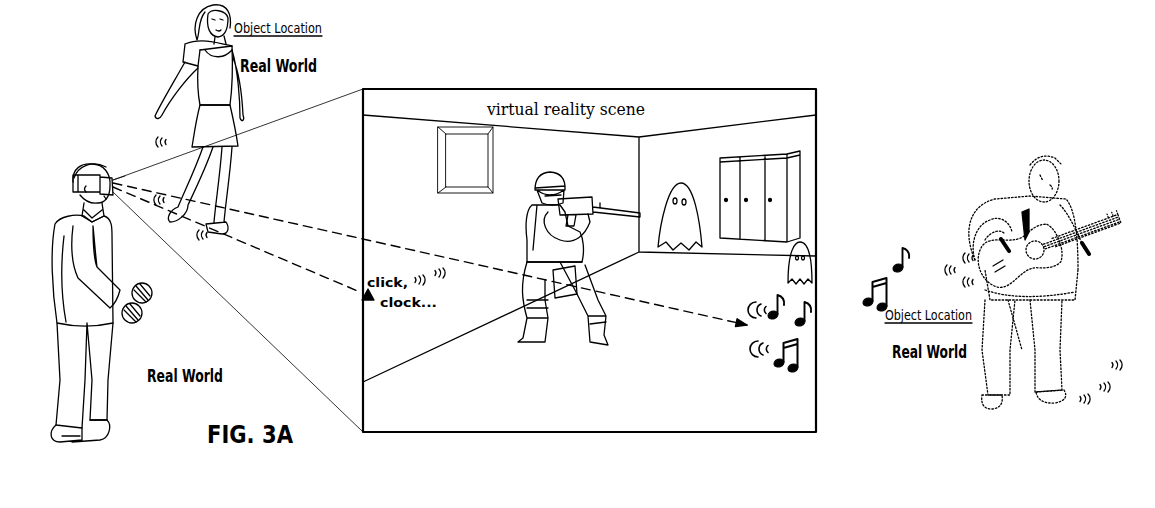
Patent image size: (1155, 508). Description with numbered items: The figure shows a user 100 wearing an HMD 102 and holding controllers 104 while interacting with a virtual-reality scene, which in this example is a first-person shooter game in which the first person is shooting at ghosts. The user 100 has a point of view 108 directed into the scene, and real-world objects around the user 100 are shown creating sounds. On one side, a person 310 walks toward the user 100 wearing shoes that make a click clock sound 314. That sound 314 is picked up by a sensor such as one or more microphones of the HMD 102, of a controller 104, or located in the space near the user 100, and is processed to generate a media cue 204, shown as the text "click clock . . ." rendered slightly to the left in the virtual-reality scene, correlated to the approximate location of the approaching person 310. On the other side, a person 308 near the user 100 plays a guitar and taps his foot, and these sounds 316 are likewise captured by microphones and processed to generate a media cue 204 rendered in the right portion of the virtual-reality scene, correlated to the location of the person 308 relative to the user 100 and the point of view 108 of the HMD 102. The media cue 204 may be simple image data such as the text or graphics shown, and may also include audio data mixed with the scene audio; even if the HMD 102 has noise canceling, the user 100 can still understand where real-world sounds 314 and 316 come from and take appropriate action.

The user 100 is at (63, 218).
The HMD 102 is at (72, 172).
The controllers 104 is at (153, 290).
The point of view 108 is at (125, 170).
The person 310 is at (199, 119).
The click clock sound 314 is at (225, 189).
The person 308 is at (1057, 293).
The sounds 316 is at (911, 280).
The media cue 204 is at (720, 360).